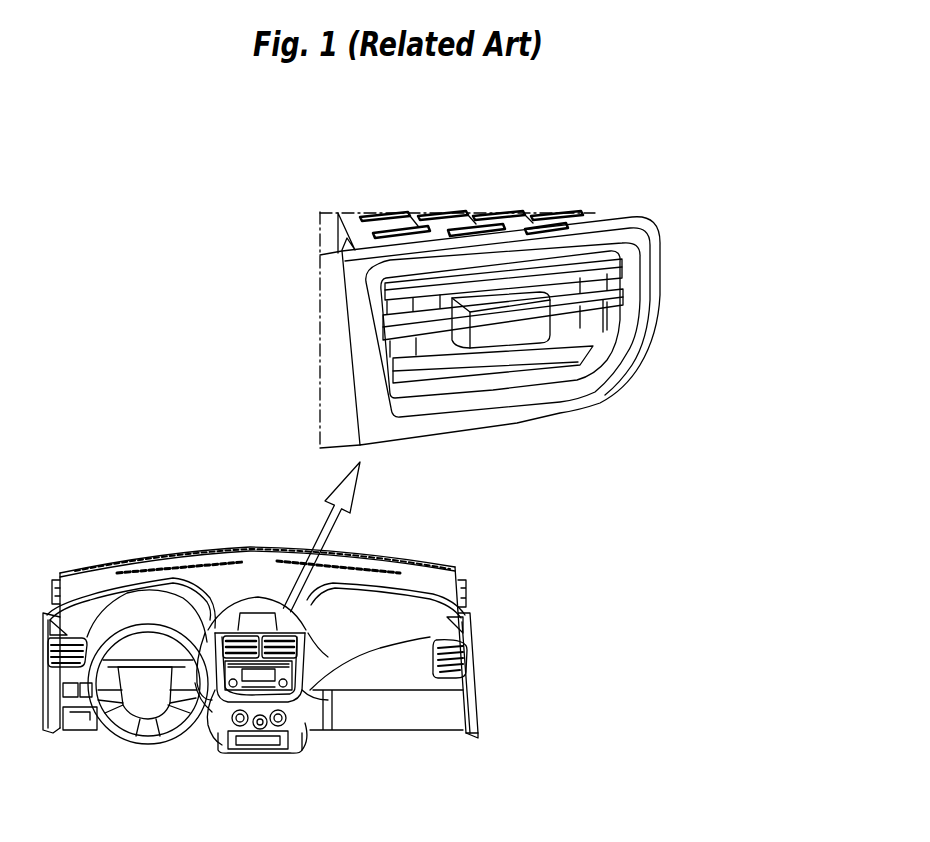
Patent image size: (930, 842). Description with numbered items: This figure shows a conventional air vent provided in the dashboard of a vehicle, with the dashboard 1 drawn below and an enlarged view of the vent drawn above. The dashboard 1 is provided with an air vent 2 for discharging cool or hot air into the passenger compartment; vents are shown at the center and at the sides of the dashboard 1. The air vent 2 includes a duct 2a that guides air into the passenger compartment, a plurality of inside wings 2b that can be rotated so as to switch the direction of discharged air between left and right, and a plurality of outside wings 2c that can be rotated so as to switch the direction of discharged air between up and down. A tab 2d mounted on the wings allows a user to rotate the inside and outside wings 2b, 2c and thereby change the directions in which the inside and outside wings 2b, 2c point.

The dashboard 1 is at (373, 663).
The air vent 2 is at (563, 206).
The duct 2a is at (404, 235).
The inside wings 2b is at (397, 310).
The outside wings 2c is at (575, 365).
The tab 2d is at (512, 328).